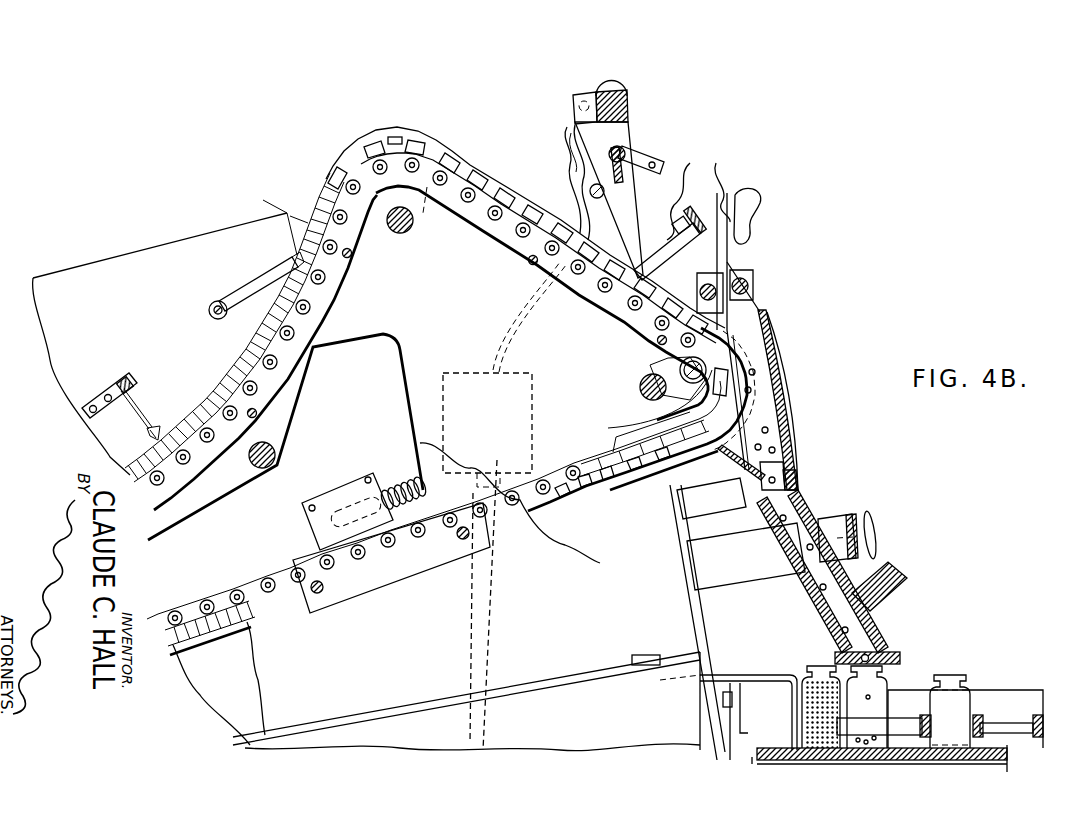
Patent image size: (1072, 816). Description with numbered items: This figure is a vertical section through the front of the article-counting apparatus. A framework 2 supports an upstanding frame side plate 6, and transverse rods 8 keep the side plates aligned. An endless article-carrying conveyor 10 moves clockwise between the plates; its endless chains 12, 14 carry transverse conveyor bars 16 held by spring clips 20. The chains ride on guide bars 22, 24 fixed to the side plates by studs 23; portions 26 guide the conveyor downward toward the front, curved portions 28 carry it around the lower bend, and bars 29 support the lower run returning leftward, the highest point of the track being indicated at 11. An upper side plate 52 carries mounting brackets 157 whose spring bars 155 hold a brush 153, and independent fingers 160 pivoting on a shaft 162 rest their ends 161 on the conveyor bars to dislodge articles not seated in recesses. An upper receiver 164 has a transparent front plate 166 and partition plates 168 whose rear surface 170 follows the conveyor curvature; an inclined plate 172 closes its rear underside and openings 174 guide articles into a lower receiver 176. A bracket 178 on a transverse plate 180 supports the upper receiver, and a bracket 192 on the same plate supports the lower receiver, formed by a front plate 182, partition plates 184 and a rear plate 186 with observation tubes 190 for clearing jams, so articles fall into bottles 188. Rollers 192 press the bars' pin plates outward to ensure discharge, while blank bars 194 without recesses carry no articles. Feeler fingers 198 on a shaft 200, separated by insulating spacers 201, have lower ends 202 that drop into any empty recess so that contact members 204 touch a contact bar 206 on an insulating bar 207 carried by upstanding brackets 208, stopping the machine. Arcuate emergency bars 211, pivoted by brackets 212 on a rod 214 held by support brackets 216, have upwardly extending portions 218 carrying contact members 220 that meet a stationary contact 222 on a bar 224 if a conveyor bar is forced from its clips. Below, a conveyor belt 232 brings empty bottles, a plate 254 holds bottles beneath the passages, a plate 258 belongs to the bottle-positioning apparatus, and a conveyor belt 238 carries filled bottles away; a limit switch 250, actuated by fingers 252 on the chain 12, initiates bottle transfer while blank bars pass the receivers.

The framework 2 is at (606, 688).
The frame side plate 6 is at (256, 207).
The transversely extending rods 8 is at (402, 234).
The endless article carrying conveyor 10 is at (268, 172).
The highestmost portion of the conveyor track 11 is at (411, 114).
The endless chain 12 is at (488, 236).
The endless chain 14 is at (429, 213).
The conveyor bars 16 is at (336, 170).
The spring clips 20 is at (393, 137).
The guide bar 22 is at (343, 280).
The studs 23 is at (352, 254).
The guide bar 24 is at (333, 304).
The portions of the guide bars 26 is at (573, 291).
The curved portions of the guide bars 28 is at (632, 432).
The bars 29 is at (565, 500).
The upper side plate 52 is at (131, 270).
The brush 153 is at (147, 432).
The spring bars 155 is at (136, 412).
The mounting brackets 157 is at (121, 378).
The fingers 160 is at (262, 291).
The ends of the fingers 161 is at (296, 257).
The shaft 162 is at (212, 311).
The upper article receiver 164 is at (847, 342).
The front plate 166 is at (772, 322).
The partition plates 168 is at (750, 312).
The rear surface 170 is at (745, 295).
The inclined plate 172 is at (780, 457).
The openings 174 is at (798, 476).
The lower receiver 176 is at (913, 546).
The bracket 178 is at (706, 500).
The plate 180 is at (676, 527).
The front plate 182 is at (803, 510).
The partition plates 184 is at (877, 553).
The rear plate 186 is at (817, 600).
The bottles 188 is at (880, 690).
The observation tubes 190 is at (898, 586).
The rollers 192 is at (662, 362).
The blank conveyor bars 194 is at (697, 100).
The feeler fingers 198 is at (622, 246).
The shaft 200 is at (575, 190).
The insulating spacers 201 is at (571, 163).
The lower end of the feeler finger 202 is at (625, 310).
The contact member 204 is at (567, 133).
The contact bar 206 is at (587, 92).
The insulating bar 207 is at (620, 88).
The upstanding brackets 208 is at (620, 140).
The arcuately formed bars 211 is at (752, 366).
The brackets 212 is at (718, 278).
The rod 214 is at (713, 238).
The support brackets 216 is at (697, 250).
The upwardly extending portions 218 is at (747, 214).
The contact members 220 is at (727, 165).
The stationary contact 222 is at (697, 170).
The bar 224 is at (658, 243).
The conveyor belt 232 is at (1010, 756).
The conveyor belt 238 is at (781, 747).
The limit switch 250 is at (322, 527).
The fingers 252 is at (272, 575).
The plate 254 is at (880, 748).
The plate 258 is at (1018, 692).